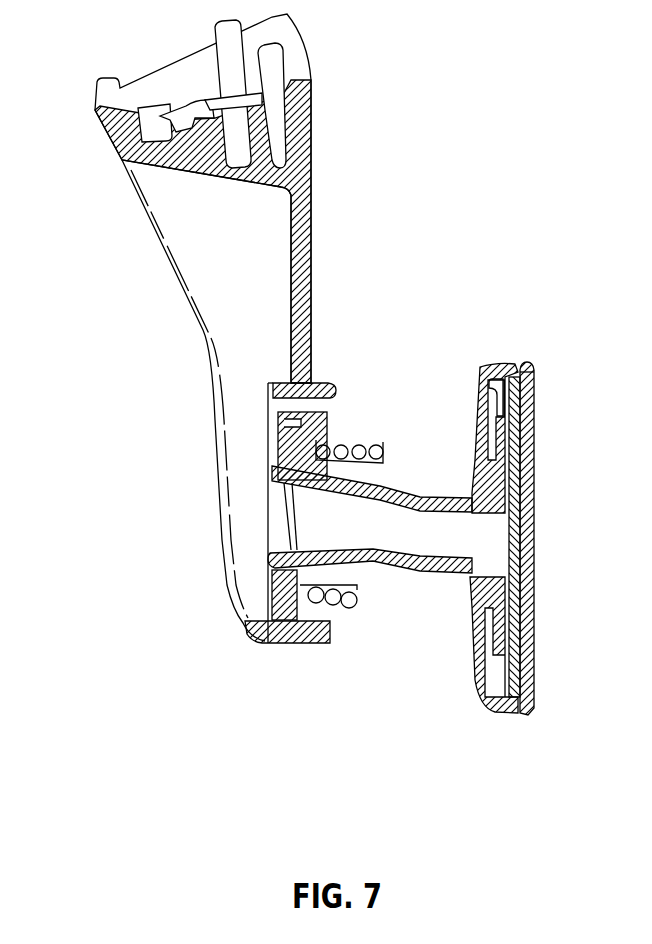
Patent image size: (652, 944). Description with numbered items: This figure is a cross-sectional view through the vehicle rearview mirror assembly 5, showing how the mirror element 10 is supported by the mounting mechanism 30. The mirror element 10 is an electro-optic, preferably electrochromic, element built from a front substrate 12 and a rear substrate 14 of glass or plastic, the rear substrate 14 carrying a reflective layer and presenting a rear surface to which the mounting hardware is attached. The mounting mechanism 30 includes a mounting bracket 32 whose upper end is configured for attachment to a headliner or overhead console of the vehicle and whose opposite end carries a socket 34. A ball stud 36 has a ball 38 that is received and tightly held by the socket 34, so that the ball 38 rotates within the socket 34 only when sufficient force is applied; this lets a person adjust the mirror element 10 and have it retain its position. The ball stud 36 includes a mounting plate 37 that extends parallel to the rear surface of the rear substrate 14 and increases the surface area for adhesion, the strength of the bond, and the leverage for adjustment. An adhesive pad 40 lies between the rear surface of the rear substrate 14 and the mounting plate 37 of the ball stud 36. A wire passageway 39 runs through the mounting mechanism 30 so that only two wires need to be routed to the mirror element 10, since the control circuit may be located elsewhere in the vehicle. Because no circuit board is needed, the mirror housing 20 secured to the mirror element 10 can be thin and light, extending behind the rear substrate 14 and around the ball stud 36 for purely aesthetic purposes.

The vehicle rearview mirror assembly 5 is at (500, 166).
The mirror element 10 is at (532, 735).
The front substrate 12 is at (526, 361).
The rear substrate 14 is at (513, 495).
The mirror housing 20 is at (482, 367).
The mounting mechanism 30 is at (166, 550).
The mounting bracket 32 is at (313, 115).
The socket 34 is at (380, 580).
The ball stud 36 is at (412, 500).
The mounting plate 37 is at (503, 400).
The ball 38 is at (333, 437).
The wire passageway 39 is at (410, 549).
The adhesive pad 40 is at (509, 448).